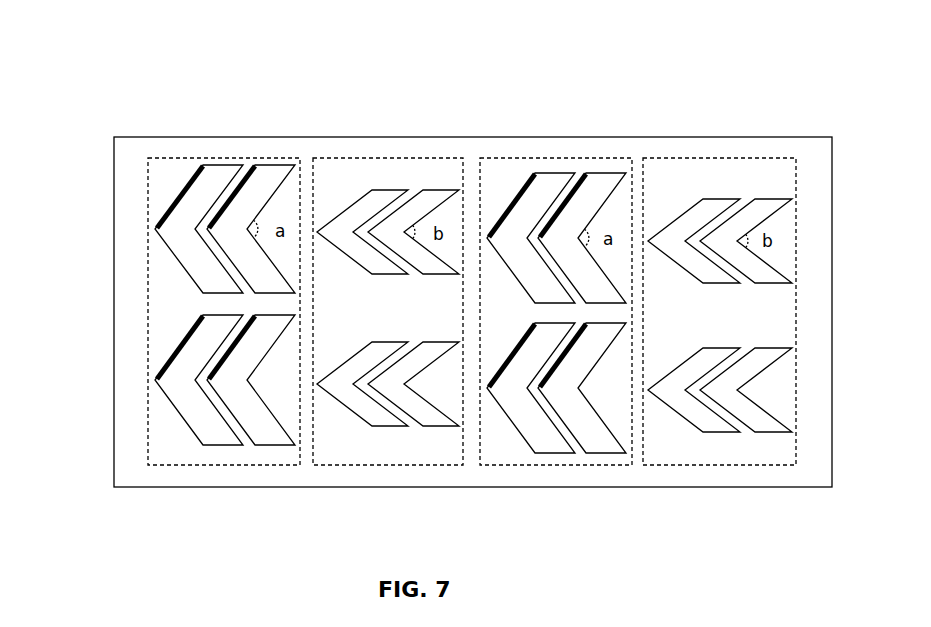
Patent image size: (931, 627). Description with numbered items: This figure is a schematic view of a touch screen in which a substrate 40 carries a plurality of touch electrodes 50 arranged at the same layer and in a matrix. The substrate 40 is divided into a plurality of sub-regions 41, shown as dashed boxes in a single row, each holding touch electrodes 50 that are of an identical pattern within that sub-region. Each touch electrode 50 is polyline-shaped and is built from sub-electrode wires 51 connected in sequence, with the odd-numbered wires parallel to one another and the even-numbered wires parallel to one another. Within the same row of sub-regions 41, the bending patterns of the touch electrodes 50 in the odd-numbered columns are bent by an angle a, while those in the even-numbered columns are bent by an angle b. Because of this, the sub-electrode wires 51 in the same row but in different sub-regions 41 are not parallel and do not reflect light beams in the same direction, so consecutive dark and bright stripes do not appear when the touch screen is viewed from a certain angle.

The substrate 40 is at (128, 150).
The sub-region 41 is at (200, 157).
The touch electrode 50 is at (288, 446).
The sub-electrode wire 51 is at (198, 323).